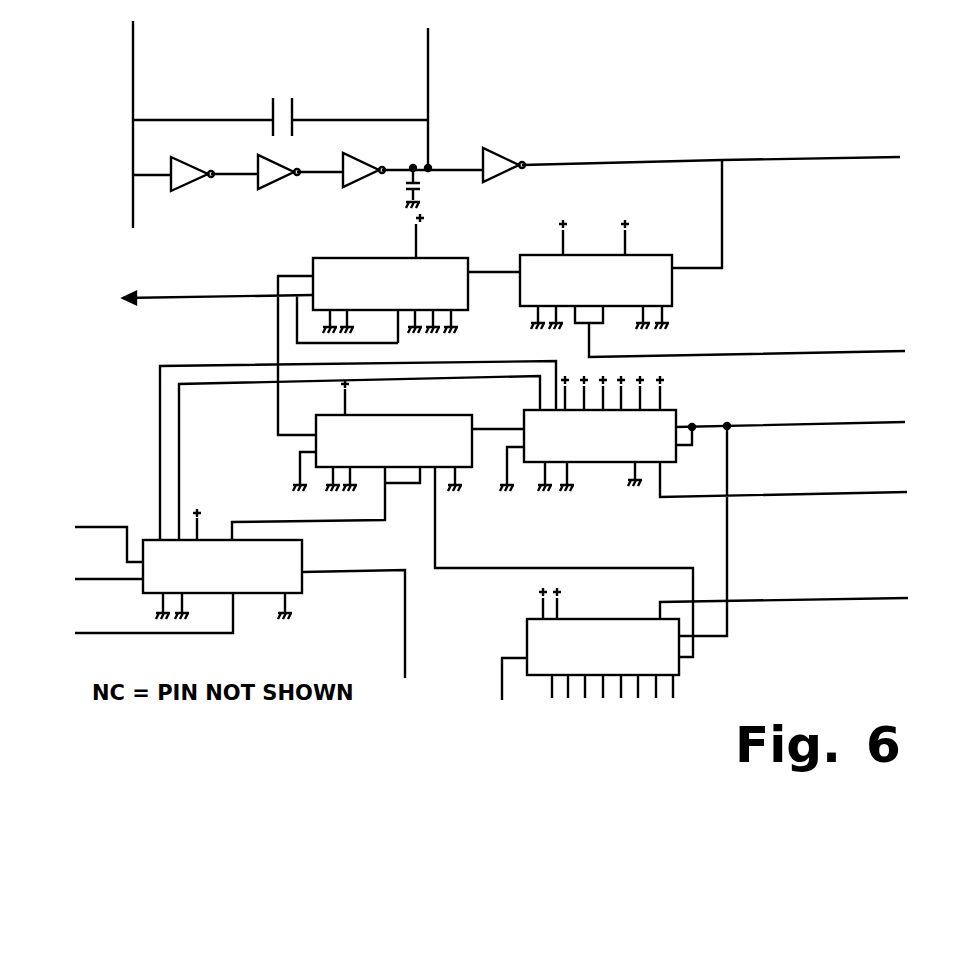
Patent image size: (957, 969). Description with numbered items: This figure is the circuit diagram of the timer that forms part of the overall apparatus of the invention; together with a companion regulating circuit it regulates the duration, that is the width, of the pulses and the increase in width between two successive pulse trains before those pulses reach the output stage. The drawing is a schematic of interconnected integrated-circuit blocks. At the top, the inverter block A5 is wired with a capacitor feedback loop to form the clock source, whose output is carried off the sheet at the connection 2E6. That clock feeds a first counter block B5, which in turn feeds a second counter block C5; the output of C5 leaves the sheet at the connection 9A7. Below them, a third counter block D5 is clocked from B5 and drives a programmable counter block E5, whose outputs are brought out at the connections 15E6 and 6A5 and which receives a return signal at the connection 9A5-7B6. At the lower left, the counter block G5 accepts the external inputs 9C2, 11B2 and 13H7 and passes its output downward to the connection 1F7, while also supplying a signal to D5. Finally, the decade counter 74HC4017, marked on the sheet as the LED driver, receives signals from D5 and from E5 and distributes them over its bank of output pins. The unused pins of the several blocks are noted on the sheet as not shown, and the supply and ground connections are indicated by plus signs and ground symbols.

The CD4069 hex inverter oscillator A5 is at (516, 139).
The CD4518 dual BCD counter B5 is at (321, 336).
The CD4518 dual BCD counter C5 is at (712, 258).
The CD4518 dual BCD counter D5 is at (462, 518).
The CD40103 down counter E5 is at (703, 506).
The counter G5 is at (240, 593).
The LED driver decade counter 74HC4017 is at (705, 657).
The clock output signal 2E6 is at (859, 152).
The output signal 9A7 is at (861, 345).
The output signal 15E6 is at (860, 416).
The input signal 6A5 is at (870, 487).
The input signal 9A5-7B6 is at (870, 592).
The input signal 9C2 is at (85, 522).
The input signal 11B2 is at (91, 574).
The input signal 13H7 is at (93, 628).
The output signal 1F7 is at (414, 657).